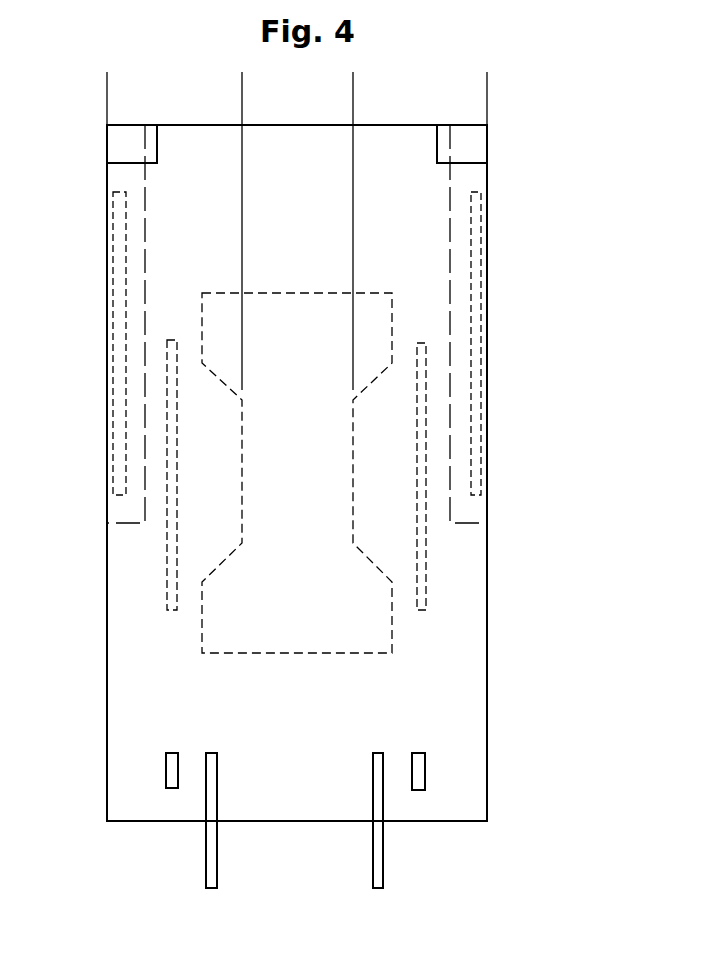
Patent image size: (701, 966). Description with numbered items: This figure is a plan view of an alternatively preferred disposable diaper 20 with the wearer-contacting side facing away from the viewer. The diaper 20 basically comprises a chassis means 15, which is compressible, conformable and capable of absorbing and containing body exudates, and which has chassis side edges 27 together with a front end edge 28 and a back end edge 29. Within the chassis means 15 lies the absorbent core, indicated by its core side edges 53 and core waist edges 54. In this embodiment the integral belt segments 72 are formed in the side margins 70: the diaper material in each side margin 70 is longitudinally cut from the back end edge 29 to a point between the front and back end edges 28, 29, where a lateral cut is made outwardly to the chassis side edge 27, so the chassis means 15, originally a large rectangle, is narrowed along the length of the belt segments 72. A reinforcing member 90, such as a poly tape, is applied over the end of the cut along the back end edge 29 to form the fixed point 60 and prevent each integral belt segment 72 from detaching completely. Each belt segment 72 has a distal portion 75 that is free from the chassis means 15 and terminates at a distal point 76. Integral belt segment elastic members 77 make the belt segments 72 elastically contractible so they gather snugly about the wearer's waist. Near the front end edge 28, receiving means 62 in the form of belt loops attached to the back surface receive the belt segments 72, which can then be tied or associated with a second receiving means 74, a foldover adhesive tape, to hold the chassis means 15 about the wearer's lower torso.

The chassis means 15 is at (503, 774).
The diaper 20 is at (512, 92).
The chassis side edge 27 is at (450, 184).
The front end edge 28 is at (122, 822).
The back end edge 29 is at (270, 124).
The core side edge 53 is at (202, 636).
The core waist edge 54 is at (287, 656).
The fixed point 60 is at (138, 124).
The receiving means 62 is at (170, 786).
The side margin 70 is at (242, 95).
The integral belt segment 72 is at (114, 509).
The second receiving means 74 is at (375, 858).
The distal portion 75 is at (96, 298).
The distal point 76 is at (140, 523).
The integral belt segment elastic member 77 is at (120, 232).
The reinforcing member 90 is at (118, 150).